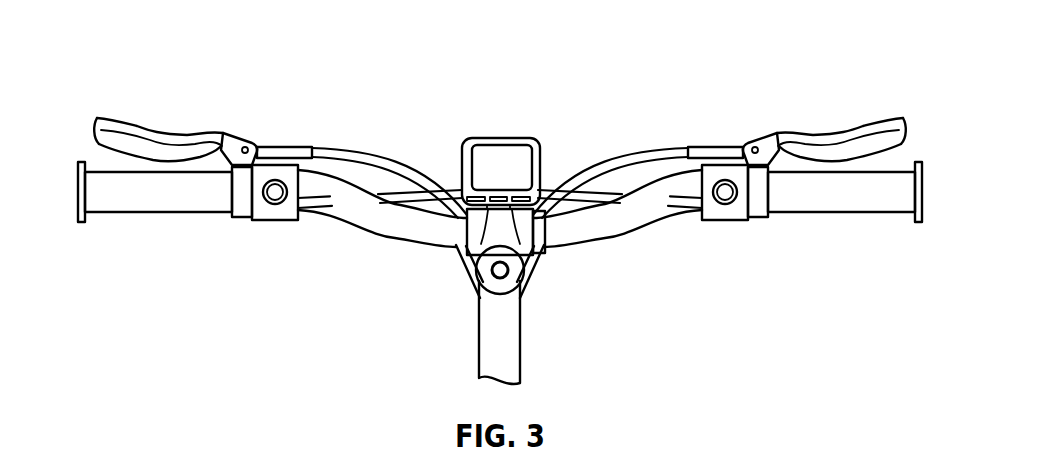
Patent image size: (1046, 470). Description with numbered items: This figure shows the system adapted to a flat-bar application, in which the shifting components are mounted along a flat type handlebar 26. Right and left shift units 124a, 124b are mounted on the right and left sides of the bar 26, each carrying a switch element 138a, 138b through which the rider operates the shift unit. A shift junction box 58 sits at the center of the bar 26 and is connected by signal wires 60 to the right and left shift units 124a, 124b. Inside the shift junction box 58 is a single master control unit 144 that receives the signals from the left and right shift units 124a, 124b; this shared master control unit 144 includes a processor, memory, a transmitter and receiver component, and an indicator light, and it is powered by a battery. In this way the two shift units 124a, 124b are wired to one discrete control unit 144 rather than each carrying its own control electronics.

The handlebar 26 is at (570, 230).
The shift junction box 58 is at (524, 108).
The signal wires 60 is at (400, 190).
The right shift unit 124a is at (723, 222).
The left shift unit 124b is at (287, 222).
The right sensor button 138a is at (735, 195).
The left sensor button 138b is at (273, 202).
The single master control unit 144 is at (508, 165).